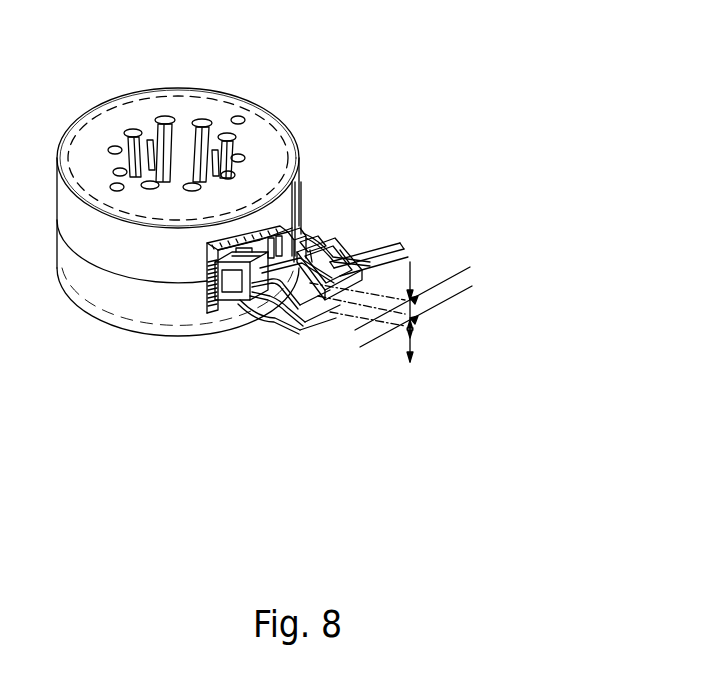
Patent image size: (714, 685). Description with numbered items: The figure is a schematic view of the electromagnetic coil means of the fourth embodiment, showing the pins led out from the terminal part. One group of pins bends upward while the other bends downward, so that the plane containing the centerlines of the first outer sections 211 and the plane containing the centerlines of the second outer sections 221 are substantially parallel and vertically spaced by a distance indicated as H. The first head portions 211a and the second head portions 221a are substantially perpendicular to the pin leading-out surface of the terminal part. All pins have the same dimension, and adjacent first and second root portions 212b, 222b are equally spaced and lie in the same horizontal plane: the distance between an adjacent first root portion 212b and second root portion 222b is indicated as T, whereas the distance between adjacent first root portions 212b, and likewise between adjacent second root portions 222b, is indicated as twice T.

The second root portion 222b is at (314, 254).
The second outer section 221 is at (332, 256).
The second head portion 221a is at (334, 290).
The first head portion 211a is at (262, 282).
The first outer section 211 is at (340, 322).
The first root portion 212b is at (280, 284).